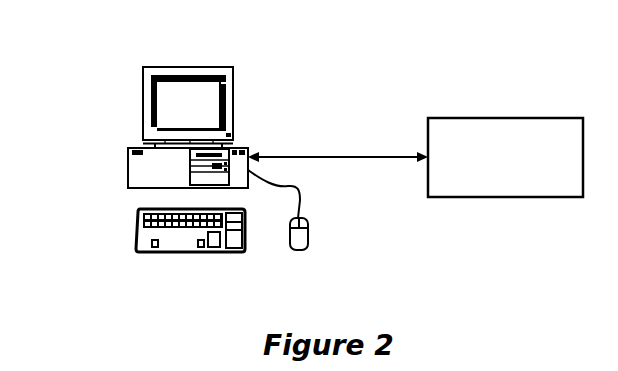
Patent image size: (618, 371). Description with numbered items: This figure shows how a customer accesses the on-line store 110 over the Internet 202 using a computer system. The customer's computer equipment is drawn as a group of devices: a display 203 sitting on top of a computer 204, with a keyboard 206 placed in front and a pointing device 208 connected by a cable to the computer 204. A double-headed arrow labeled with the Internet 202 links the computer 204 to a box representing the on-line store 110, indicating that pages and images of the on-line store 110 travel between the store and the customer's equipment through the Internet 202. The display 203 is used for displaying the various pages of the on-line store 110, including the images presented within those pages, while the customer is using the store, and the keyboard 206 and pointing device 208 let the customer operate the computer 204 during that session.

The on-line store 110 is at (489, 180).
The Internet 202 is at (395, 152).
The display 203 is at (219, 82).
The computer 204 is at (139, 145).
The keyboard 206 is at (154, 259).
The pointing device 208 is at (255, 239).